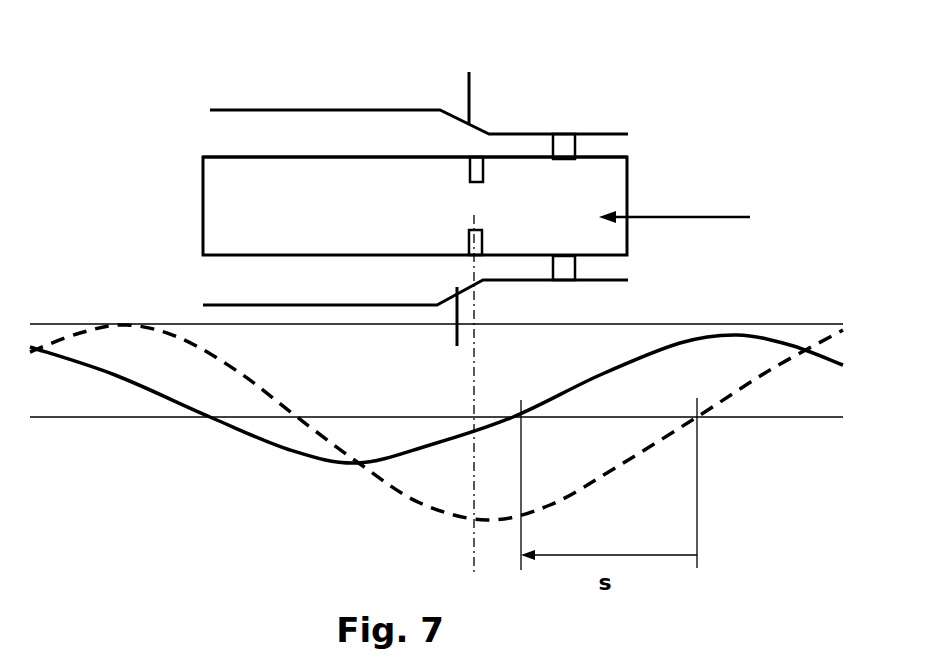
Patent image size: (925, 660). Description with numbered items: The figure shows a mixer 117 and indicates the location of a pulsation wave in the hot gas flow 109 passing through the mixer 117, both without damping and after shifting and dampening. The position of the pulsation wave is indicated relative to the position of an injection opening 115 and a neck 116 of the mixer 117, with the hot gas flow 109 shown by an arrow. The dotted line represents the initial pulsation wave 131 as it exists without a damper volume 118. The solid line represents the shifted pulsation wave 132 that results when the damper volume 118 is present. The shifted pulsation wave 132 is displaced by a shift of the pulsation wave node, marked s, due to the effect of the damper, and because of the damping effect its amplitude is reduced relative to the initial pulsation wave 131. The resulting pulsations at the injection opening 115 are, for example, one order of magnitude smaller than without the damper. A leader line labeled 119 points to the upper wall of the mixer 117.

The hot gas flow 109 is at (674, 201).
The injection opening 115 is at (475, 168).
The neck 116 is at (560, 143).
The mixer 117 is at (262, 225).
The damper volume 118 is at (497, 106).
The body surface 119 is at (343, 157).
The initial pulsation wave 131 is at (765, 373).
The shifted pulsation wave 132 is at (258, 435).